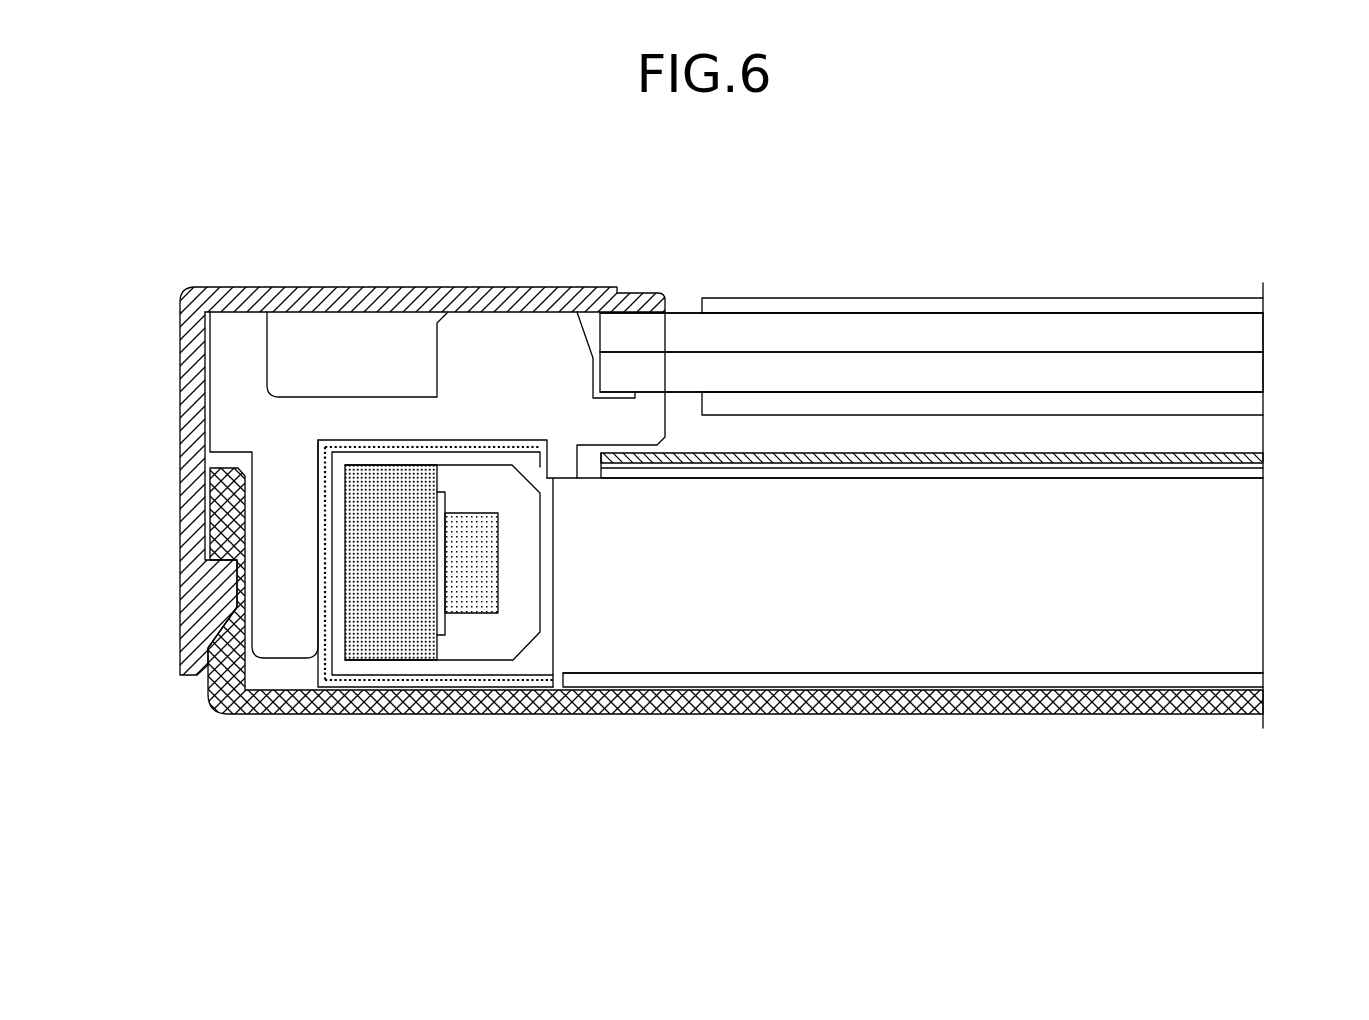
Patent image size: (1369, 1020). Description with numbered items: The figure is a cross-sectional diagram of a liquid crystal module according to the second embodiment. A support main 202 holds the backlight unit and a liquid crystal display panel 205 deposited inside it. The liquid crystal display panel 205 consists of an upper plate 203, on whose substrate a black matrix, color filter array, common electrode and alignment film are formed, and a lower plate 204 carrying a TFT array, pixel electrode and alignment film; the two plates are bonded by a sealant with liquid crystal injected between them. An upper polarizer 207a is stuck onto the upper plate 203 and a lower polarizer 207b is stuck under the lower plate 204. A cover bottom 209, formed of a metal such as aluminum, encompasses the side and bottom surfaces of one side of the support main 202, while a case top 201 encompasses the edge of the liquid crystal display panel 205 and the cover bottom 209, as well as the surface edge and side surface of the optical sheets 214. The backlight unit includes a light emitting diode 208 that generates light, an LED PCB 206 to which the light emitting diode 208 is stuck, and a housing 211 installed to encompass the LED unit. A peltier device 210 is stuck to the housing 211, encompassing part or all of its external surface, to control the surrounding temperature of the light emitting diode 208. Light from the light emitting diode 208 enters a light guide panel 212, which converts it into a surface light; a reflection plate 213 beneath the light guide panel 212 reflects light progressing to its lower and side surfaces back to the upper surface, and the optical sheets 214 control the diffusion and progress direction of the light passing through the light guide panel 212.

The case top 201 is at (397, 302).
The support main 202 is at (240, 357).
The upper plate 203 is at (925, 337).
The lower plate 204 is at (837, 375).
The liquid crystal display panel 205 is at (948, 207).
The LED PCB 206 is at (387, 662).
The upper polarizer 207a is at (1110, 305).
The lower polarizer 207b is at (1172, 398).
The light emitting diode 208 is at (482, 614).
The cover bottom 209 is at (1105, 712).
The peltier device 210 is at (327, 460).
The housing 211 is at (344, 667).
The light guide panel 212 is at (1247, 558).
The reflection plate 213 is at (1247, 680).
The optical sheets 214 is at (1282, 450).